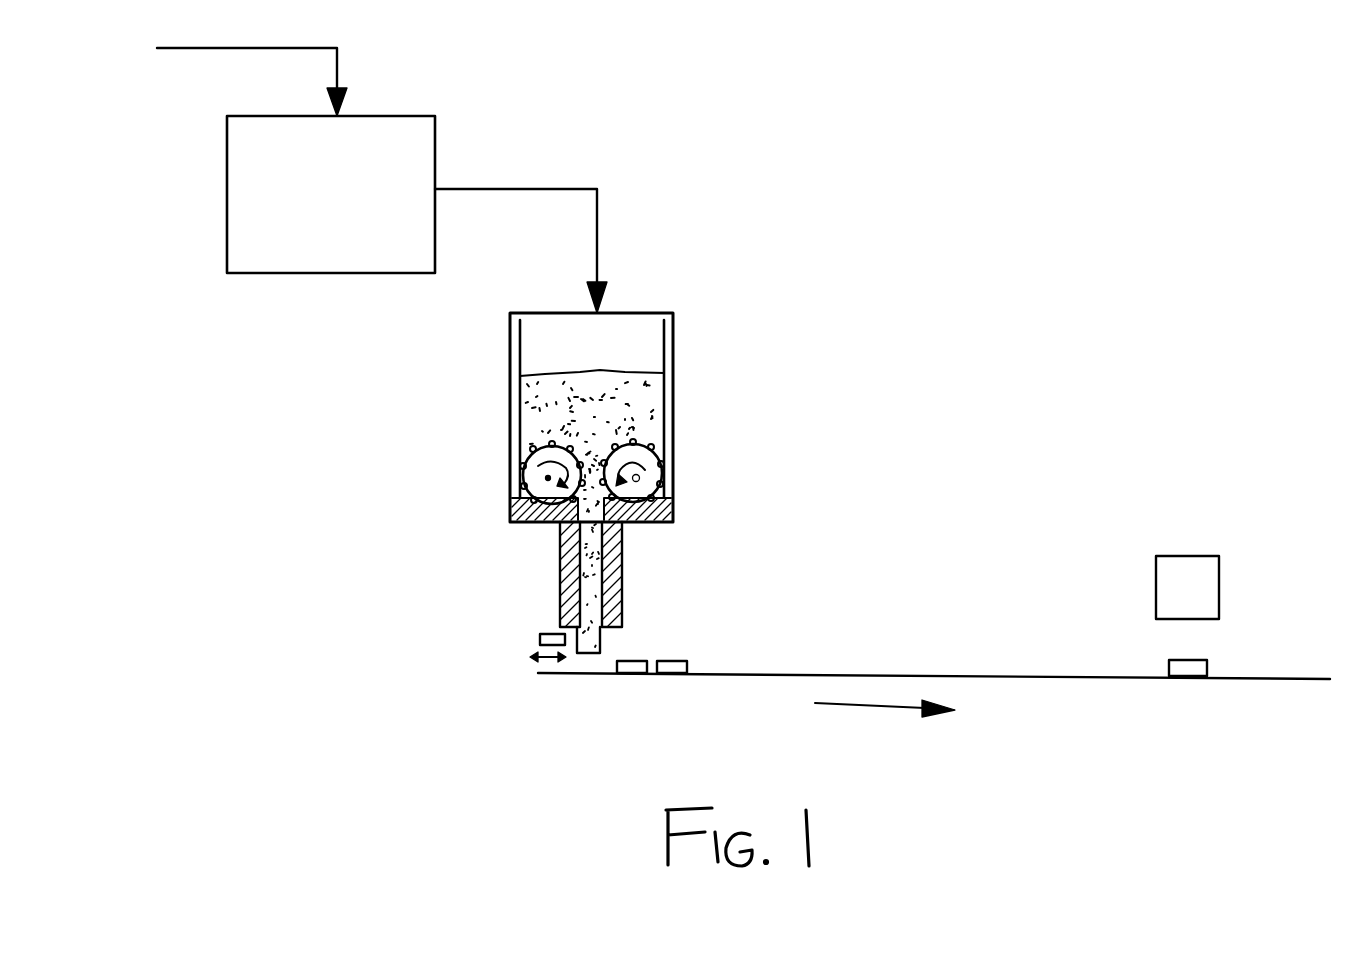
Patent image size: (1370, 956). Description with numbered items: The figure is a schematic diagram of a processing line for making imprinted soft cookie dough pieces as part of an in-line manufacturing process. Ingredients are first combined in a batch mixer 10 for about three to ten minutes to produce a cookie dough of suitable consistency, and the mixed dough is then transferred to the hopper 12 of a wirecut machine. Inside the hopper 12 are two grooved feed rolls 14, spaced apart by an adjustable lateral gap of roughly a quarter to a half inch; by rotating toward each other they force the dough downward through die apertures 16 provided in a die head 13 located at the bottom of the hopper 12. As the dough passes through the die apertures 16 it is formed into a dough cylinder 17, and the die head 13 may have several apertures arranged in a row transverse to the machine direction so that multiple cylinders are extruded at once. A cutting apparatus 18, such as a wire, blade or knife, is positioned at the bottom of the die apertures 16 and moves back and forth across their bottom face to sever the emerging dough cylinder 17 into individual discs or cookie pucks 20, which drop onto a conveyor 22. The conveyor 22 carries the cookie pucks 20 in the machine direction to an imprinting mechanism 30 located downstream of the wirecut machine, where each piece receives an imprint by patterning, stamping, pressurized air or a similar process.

The mixer 10 is at (328, 153).
The hopper 12 is at (640, 353).
The die head 13 is at (612, 572).
The grooved feed rolls 14 is at (522, 486).
The die apertures 16 is at (595, 628).
The dough cylinder 17 is at (605, 650).
The cutting apparatus 18 is at (535, 634).
The cookie pucks 20 is at (633, 675).
The conveyor 22 is at (865, 672).
The imprinting mechanism 30 is at (1198, 588).